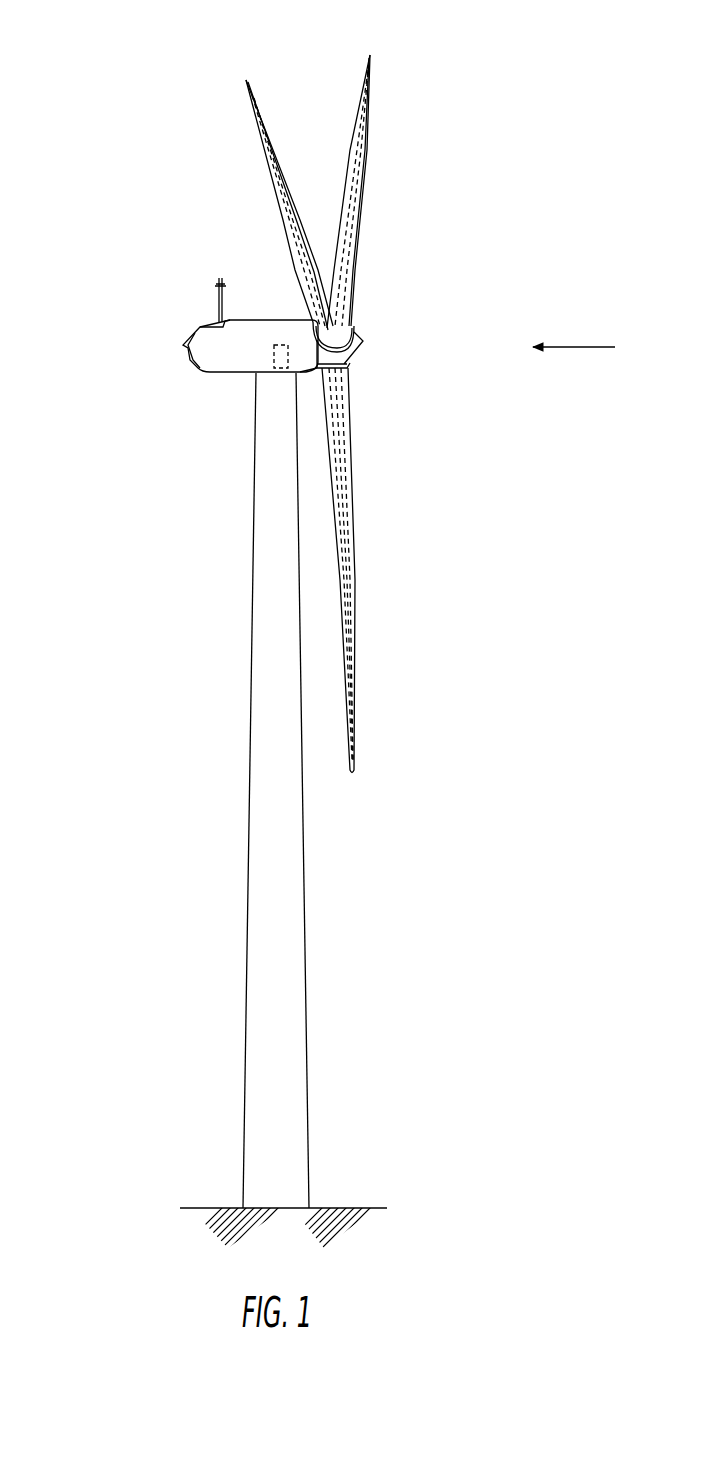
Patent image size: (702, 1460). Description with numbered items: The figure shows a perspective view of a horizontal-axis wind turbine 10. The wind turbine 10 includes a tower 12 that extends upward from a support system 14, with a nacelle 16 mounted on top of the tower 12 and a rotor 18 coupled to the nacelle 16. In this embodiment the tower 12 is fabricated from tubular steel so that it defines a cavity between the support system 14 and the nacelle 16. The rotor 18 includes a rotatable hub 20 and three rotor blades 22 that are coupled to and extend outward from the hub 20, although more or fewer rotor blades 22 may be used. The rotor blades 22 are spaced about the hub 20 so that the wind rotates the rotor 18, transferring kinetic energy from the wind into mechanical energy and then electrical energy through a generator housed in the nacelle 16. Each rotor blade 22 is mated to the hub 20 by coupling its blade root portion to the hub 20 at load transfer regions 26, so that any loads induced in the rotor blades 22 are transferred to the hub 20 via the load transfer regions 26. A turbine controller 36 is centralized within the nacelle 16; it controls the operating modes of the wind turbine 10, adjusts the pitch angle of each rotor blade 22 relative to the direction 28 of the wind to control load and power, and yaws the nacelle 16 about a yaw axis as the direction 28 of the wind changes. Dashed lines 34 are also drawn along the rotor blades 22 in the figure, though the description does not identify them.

The wind turbine 10 is at (131, 183).
The tower 12 is at (288, 860).
The support system 14 is at (222, 1208).
The nacelle 16 is at (228, 373).
The rotor 18 is at (416, 278).
The rotatable hub 20 is at (364, 341).
The rotor blade 22 is at (365, 73).
The load transfer region 26 is at (347, 366).
The direction of the wind 28 is at (585, 346).
The blade structural member / sensor 34 is at (288, 232).
The turbine controller 36 is at (283, 370).